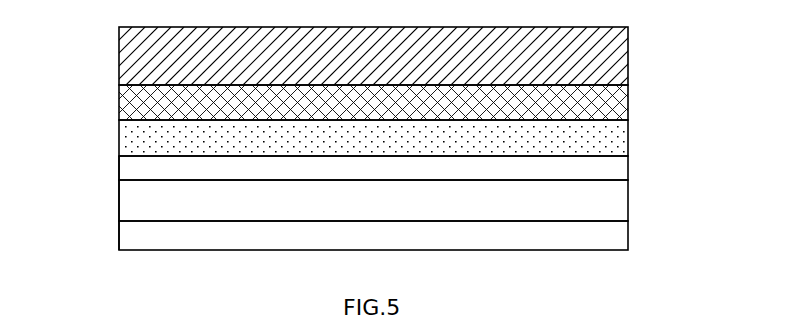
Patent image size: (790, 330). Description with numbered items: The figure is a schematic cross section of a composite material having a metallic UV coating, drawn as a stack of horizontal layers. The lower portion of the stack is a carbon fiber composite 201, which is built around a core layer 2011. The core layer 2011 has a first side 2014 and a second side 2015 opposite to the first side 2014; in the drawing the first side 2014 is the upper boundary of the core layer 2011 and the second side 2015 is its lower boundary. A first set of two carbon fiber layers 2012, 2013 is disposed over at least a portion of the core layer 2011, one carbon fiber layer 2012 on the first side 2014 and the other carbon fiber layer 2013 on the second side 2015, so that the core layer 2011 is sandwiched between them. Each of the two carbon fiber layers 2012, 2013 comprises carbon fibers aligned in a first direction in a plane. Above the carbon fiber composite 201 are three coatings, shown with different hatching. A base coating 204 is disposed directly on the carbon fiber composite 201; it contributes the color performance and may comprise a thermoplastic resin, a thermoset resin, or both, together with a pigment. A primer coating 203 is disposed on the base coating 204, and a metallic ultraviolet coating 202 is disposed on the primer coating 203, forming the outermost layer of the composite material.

The metallic ultraviolet coating 202 is at (628, 58).
The base coating 204 is at (628, 95).
The primer coating 203 is at (628, 132).
The first side 2014 is at (608, 180).
The carbon fiber composite 201 is at (628, 203).
The second side 2015 is at (608, 221).
The carbon fiber layer 2012 is at (119, 170).
The core layer 2011 is at (119, 205).
The carbon fiber layer 2013 is at (119, 234).